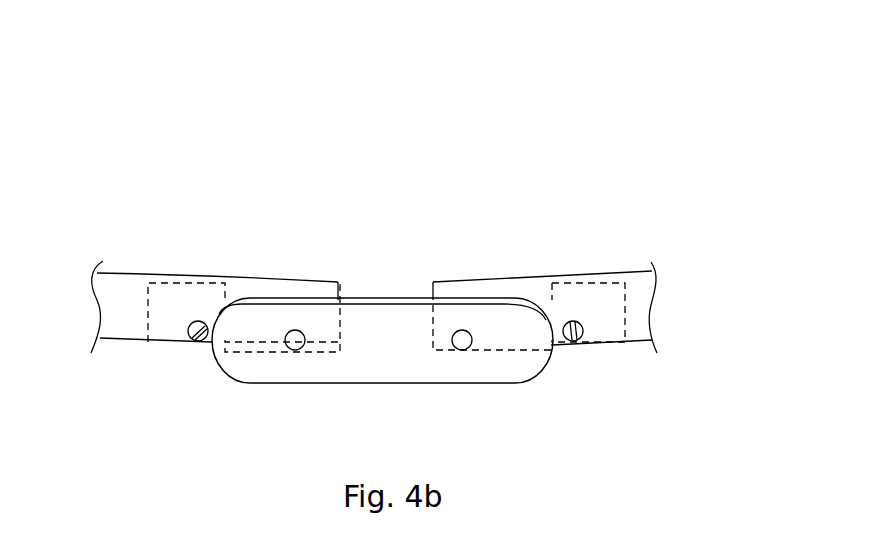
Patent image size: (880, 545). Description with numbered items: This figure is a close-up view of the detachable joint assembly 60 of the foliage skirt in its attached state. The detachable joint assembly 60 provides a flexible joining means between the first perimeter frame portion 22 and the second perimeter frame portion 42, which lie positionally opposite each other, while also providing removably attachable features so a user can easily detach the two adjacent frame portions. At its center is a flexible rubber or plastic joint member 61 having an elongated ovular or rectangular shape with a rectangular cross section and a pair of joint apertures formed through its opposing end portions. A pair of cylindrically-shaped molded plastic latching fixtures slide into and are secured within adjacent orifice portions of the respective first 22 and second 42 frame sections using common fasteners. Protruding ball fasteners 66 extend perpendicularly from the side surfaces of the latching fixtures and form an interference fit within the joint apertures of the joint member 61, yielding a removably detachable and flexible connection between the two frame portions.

The detachable joint assembly 60 is at (258, 105).
The second perimeter frame portion 42 is at (117, 273).
The first perimeter frame portion 22 is at (648, 303).
The joint member 61 is at (405, 373).
The ball fastener 66 is at (455, 333).